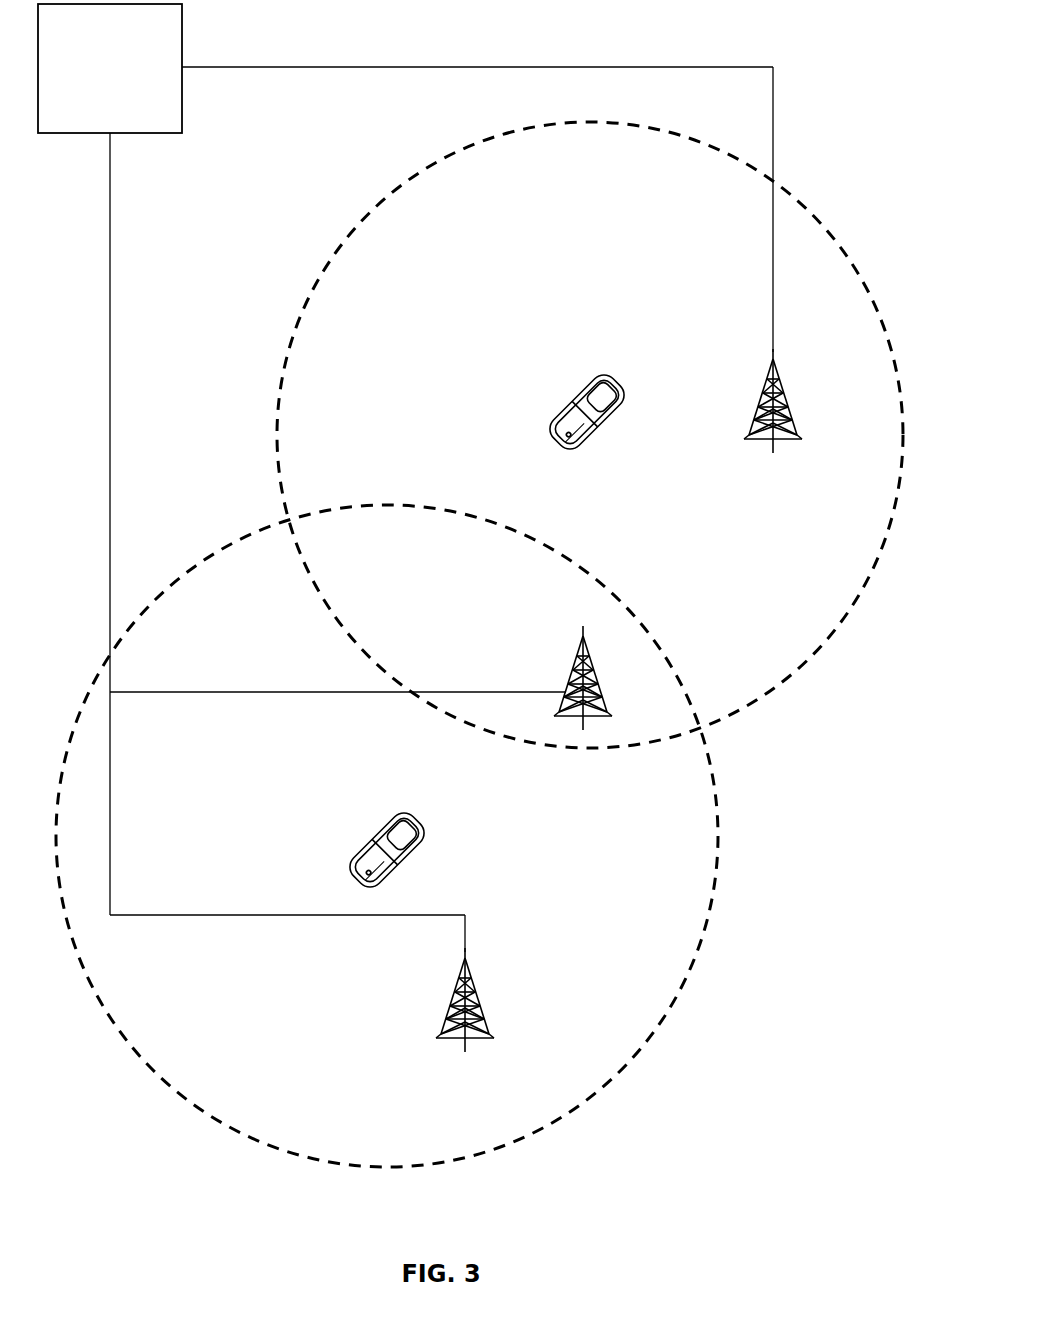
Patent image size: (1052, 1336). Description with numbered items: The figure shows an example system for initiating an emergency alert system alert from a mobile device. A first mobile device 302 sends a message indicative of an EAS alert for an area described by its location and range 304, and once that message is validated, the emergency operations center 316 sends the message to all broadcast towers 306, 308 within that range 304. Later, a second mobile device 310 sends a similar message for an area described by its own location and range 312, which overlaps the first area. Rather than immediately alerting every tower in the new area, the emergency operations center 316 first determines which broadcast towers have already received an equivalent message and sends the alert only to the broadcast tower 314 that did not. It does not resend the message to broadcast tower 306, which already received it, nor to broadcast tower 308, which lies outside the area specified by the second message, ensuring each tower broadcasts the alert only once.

The first mobile device 302 is at (344, 810).
The range 304 is at (387, 815).
The broadcast tower 306 is at (516, 658).
The broadcast tower 308 is at (533, 970).
The second mobile device 310 is at (528, 389).
The range 312 is at (590, 425).
The broadcast tower 314 is at (705, 371).
The emergency operations center 316 is at (110, 68).